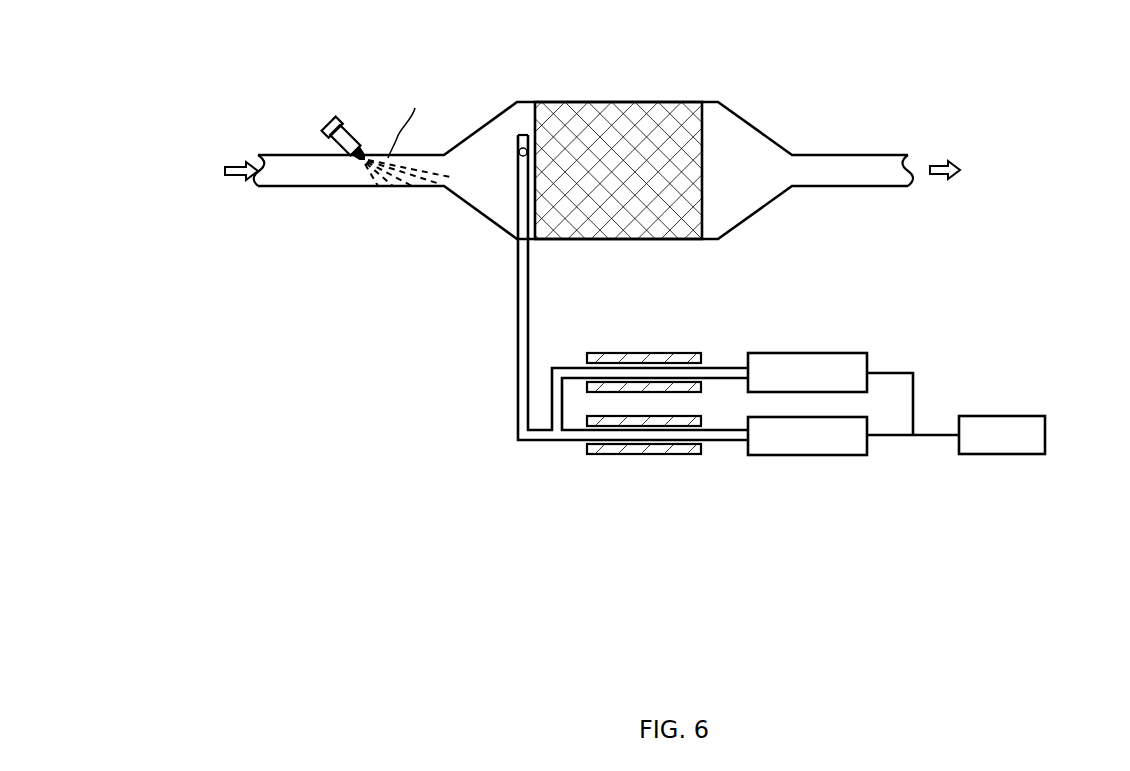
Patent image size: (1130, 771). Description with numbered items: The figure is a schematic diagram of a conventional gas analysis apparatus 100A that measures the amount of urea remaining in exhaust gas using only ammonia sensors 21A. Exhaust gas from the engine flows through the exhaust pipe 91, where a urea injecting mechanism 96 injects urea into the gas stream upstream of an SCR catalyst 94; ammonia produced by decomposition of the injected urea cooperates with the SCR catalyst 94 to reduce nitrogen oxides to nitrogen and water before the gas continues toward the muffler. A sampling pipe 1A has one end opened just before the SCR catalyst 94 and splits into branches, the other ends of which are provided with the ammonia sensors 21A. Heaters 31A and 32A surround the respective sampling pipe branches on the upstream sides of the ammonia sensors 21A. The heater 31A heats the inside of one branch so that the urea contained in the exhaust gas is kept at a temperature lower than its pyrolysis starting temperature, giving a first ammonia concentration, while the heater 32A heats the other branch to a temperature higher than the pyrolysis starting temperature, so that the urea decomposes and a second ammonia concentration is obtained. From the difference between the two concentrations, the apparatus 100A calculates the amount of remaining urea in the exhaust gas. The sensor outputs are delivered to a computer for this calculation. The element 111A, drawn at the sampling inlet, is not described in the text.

The sampling pipe 1A is at (477, 504).
The ammonia sensors 21A is at (837, 353).
The heater 31A is at (613, 353).
The heater 32A is at (617, 456).
The exhaust pipe 91 is at (478, 212).
The SCR catalyst 94 is at (617, 102).
The urea injecting mechanism 96 is at (338, 118).
The gas analysis apparatus 100A is at (1013, 204).
The sampling tube 111A is at (519, 150).